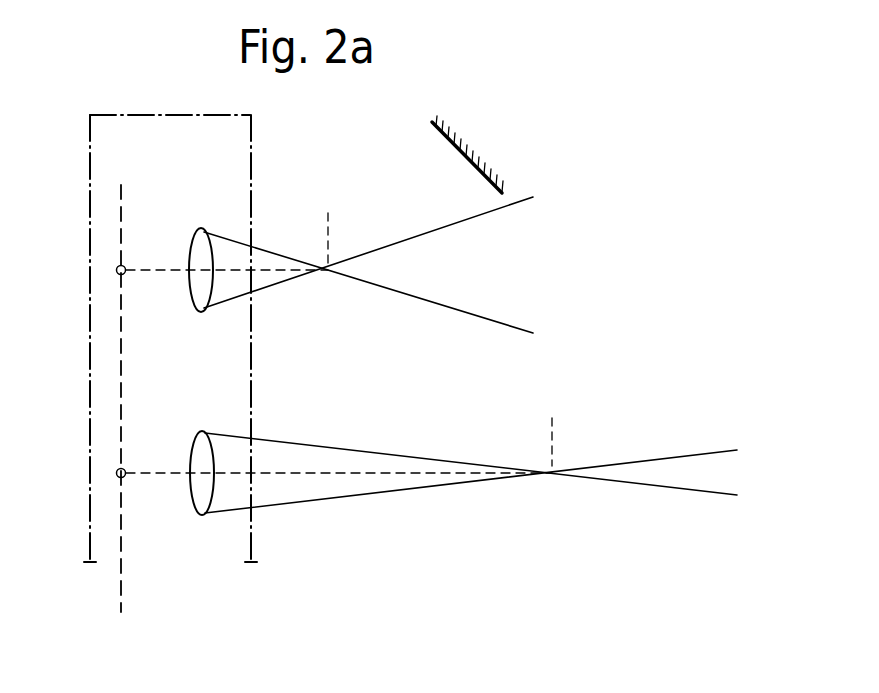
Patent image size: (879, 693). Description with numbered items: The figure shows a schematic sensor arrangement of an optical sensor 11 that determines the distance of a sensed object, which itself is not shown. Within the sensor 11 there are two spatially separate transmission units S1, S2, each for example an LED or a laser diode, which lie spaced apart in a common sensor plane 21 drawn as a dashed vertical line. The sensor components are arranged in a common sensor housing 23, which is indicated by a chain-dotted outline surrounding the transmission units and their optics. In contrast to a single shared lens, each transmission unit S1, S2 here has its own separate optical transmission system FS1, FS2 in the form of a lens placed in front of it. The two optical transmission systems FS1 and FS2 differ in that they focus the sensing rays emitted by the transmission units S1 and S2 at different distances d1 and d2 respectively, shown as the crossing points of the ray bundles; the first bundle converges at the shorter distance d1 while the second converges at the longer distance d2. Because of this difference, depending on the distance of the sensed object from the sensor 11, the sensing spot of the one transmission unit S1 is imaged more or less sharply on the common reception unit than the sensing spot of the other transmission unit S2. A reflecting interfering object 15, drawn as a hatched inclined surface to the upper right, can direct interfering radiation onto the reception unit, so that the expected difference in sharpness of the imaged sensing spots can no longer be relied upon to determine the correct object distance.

The sensor 11 is at (122, 104).
The reflecting interfering object 15 is at (482, 172).
The sensor plane 21 is at (121, 568).
The sensor housing 23 is at (253, 540).
The transmission unit S1 is at (116, 270).
The transmission unit S2 is at (116, 474).
The optical transmission system FS1 is at (205, 234).
The optical transmission system FS2 is at (206, 437).
The focusing distance d1 is at (326, 221).
The focusing distance d2 is at (553, 426).